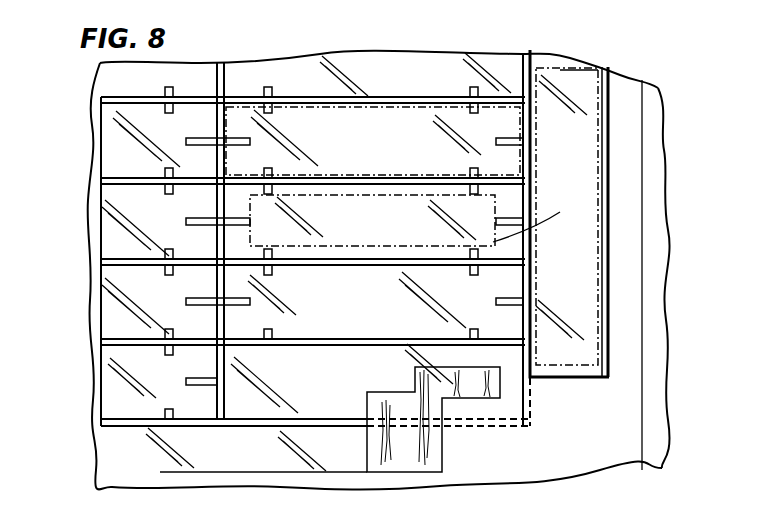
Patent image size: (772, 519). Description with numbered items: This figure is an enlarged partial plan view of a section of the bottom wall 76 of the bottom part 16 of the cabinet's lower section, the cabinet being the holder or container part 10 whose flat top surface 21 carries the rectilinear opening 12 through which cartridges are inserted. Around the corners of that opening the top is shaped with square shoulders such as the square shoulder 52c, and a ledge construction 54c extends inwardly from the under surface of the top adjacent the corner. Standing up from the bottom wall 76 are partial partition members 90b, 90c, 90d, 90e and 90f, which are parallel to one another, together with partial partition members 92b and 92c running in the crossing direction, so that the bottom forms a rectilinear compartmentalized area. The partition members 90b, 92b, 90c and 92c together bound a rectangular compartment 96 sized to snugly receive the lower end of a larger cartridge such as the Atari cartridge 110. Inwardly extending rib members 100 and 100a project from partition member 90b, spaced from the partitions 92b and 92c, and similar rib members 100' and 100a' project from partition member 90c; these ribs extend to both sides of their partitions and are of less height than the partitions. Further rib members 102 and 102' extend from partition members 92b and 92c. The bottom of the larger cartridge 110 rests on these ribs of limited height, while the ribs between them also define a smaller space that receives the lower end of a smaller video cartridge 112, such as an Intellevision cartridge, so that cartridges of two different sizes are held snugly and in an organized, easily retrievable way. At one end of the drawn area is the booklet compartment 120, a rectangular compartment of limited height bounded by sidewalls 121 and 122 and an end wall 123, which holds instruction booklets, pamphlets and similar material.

The holder or container part 10 is at (603, 46).
The rectilinear opening 12 is at (430, 450).
The bottom part 16 is at (622, 78).
The top surface 21 is at (542, 461).
The square shoulder 52c is at (417, 378).
The ledge construction 54c is at (360, 446).
The bottom wall 76 is at (262, 63).
The partial partition member 90b is at (355, 98).
The partial partition member 90c is at (347, 172).
The partial partition member 90d is at (340, 254).
The partial partition member 90e is at (326, 340).
The partial partition member 90f is at (310, 418).
The partial partition member 92b is at (217, 285).
The partial partition member 92c is at (496, 300).
The rectangular compartment 96 is at (356, 141).
The rib member 100 is at (321, 243).
The rib member 100' is at (286, 224).
The rib member 100a is at (448, 155).
The rib member 100a' is at (440, 240).
The rib member 102 is at (210, 251).
The rib member 102' is at (522, 174).
The Atari cartridge 110 is at (380, 108).
The video cartridge 112 is at (508, 221).
The booklet compartment 120 is at (592, 166).
The sidewall 121 is at (528, 110).
The sidewall 122 is at (600, 86).
The end wall 123 is at (573, 378).